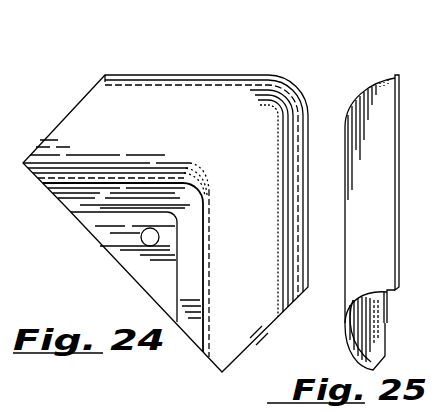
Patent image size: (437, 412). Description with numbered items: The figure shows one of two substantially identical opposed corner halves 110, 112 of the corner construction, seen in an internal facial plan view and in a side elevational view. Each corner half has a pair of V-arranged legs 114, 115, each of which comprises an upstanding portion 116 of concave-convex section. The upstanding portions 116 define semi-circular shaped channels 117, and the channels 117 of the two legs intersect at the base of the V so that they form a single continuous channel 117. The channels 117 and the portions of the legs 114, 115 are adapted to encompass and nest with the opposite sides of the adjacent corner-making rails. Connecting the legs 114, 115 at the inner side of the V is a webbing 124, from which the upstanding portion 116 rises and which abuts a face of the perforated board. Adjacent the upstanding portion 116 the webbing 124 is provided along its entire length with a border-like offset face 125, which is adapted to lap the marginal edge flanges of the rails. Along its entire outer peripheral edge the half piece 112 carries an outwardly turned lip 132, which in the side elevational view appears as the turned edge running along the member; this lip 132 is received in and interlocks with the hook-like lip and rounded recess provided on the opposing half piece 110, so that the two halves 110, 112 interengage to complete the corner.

In FIG. 25, the corner half 110 is at (391, 200).
In FIG. 24, the corner half 112 is at (231, 72).
In FIG. 25, the corner half 112 is at (404, 192).
In FIG. 24, the leg 114 is at (72, 128).
In FIG. 24, the leg 115 is at (260, 312).
In FIG. 25, the upstanding portion 116 is at (347, 329).
In FIG. 24, the channel 117 is at (196, 128).
In FIG. 25, the channel 117 is at (372, 316).
In FIG. 24, the webbing 124 is at (122, 244).
In FIG. 24, the offset face 125 is at (70, 200).
In FIG. 24, the outwardly turned lip 132 is at (278, 87).
In FIG. 25, the outwardly turned lip 132 is at (394, 80).